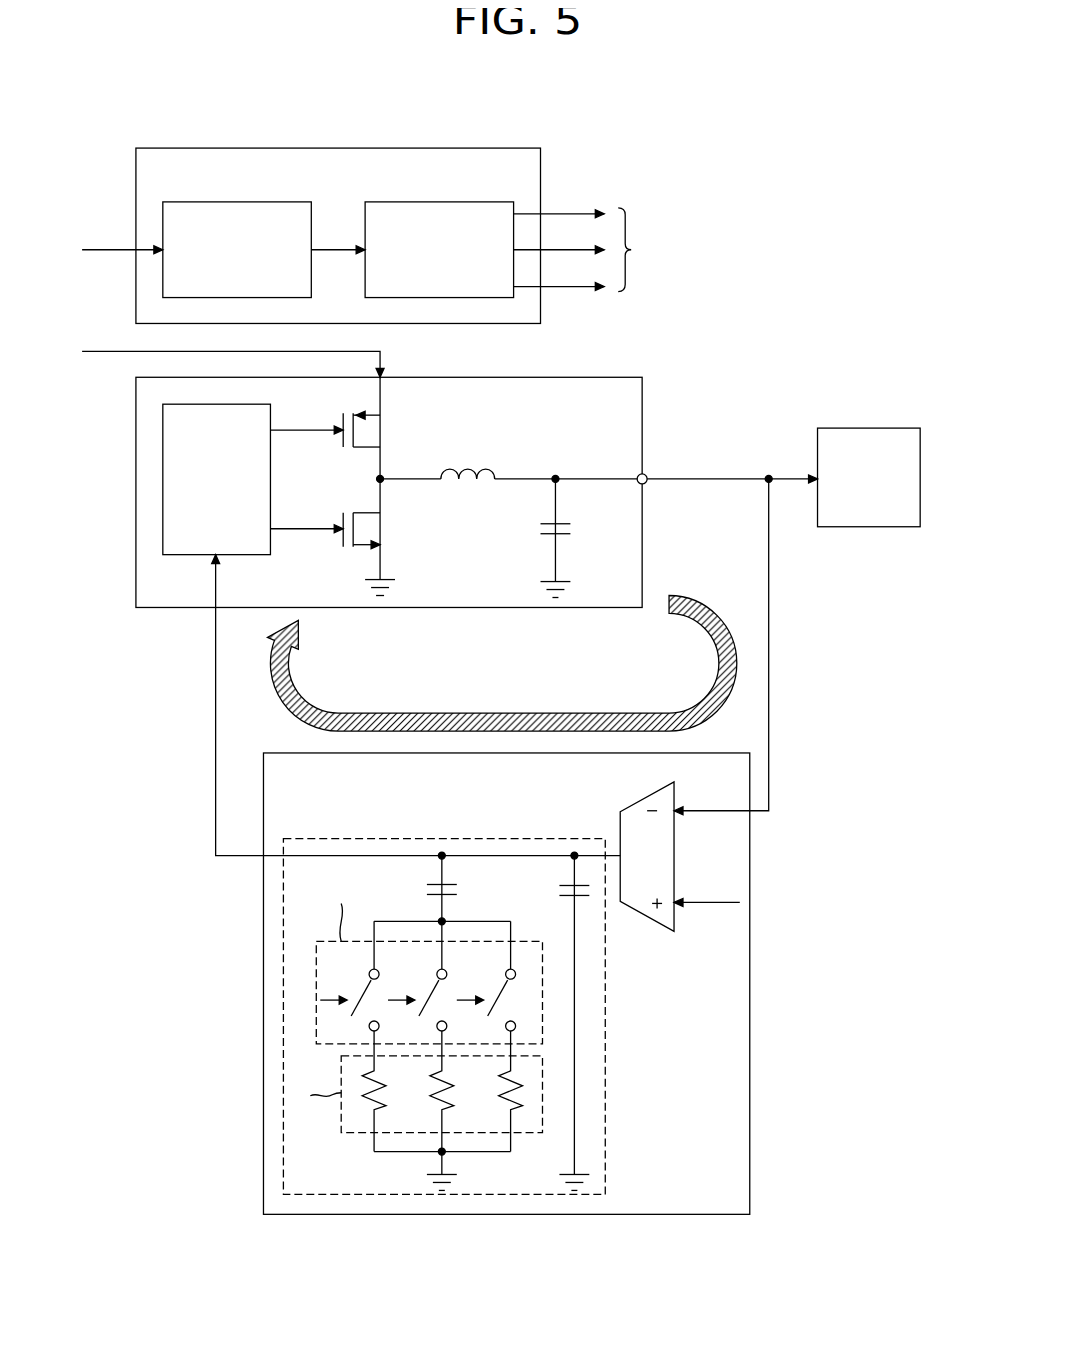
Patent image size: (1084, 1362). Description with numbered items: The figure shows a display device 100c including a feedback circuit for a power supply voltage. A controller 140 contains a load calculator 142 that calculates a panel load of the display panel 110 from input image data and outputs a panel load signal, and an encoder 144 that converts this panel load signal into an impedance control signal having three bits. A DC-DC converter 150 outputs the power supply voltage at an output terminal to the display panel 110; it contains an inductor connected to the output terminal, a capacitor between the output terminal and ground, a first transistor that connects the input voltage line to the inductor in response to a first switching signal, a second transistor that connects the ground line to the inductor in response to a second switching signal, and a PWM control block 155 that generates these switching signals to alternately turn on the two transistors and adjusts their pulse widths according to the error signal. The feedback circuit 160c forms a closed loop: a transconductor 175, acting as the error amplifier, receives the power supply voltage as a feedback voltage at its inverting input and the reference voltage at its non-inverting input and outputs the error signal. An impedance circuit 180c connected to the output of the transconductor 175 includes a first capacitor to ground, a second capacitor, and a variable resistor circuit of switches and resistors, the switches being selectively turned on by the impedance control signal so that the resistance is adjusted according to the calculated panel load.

The display device 100c is at (818, 150).
The display panel 110 is at (872, 428).
The controller 140 is at (338, 147).
The load calculator 142 is at (222, 201).
The encoder 144 is at (454, 201).
The DC-DC converter 150 is at (645, 400).
The PWM control block 155 is at (164, 479).
The feedback circuit 160c is at (265, 990).
The transconductor 175 is at (650, 797).
The impedance circuit 180c is at (608, 1048).